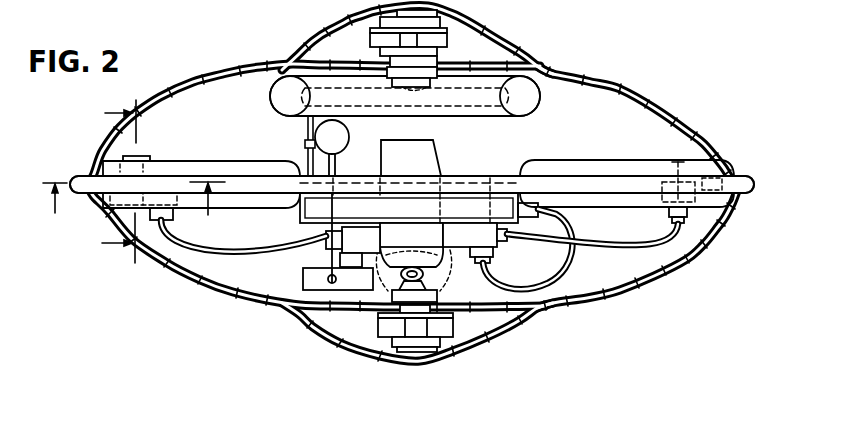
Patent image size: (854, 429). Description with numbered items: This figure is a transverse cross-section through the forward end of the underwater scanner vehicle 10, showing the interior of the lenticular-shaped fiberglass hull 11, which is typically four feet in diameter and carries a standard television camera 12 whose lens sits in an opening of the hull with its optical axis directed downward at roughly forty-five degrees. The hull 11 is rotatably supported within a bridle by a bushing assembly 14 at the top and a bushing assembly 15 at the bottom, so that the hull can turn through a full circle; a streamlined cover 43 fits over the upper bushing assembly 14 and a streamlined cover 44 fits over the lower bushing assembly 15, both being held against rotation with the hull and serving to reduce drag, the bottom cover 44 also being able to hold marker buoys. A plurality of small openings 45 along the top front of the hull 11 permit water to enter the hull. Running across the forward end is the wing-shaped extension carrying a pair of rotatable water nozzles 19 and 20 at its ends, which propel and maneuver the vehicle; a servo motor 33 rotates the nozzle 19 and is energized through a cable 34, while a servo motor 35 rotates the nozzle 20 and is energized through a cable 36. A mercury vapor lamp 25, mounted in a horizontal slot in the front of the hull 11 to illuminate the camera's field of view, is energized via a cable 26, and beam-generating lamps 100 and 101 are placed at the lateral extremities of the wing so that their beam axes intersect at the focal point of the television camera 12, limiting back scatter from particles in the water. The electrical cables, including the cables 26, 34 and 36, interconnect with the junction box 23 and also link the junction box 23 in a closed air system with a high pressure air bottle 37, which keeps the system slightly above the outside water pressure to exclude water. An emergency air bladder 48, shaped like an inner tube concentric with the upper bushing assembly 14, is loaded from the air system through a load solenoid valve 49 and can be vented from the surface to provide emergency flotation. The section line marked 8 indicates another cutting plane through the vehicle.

The section line 8- 8 is at (134, 212).
The underwater scanner vehicle 10 is at (106, 181).
The hull 11 is at (674, 110).
The television camera 12 is at (433, 141).
The bushing assembly 14 is at (440, 49).
The bushing assembly 15 is at (382, 328).
The water nozzle 19 is at (82, 175).
The water nozzle 20 is at (753, 189).
The junction box 23 is at (463, 178).
The mercury vapor lamp 25 is at (300, 217).
The cable 26 is at (558, 273).
The servo motor 33 is at (172, 182).
The cable 34 is at (219, 256).
The servo motor 35 is at (678, 162).
The cable 36 is at (587, 240).
The high pressure air bottle 37 is at (354, 134).
The streamlined cover 43 is at (465, 20).
The streamlined cover 44 is at (465, 347).
The openings 45 is at (230, 73).
The emergency air bladder 48 is at (542, 99).
The load solenoid valve 49 is at (305, 119).
The beam-generating lamp 100 is at (142, 156).
The beam-generating lamp 101 is at (720, 166).